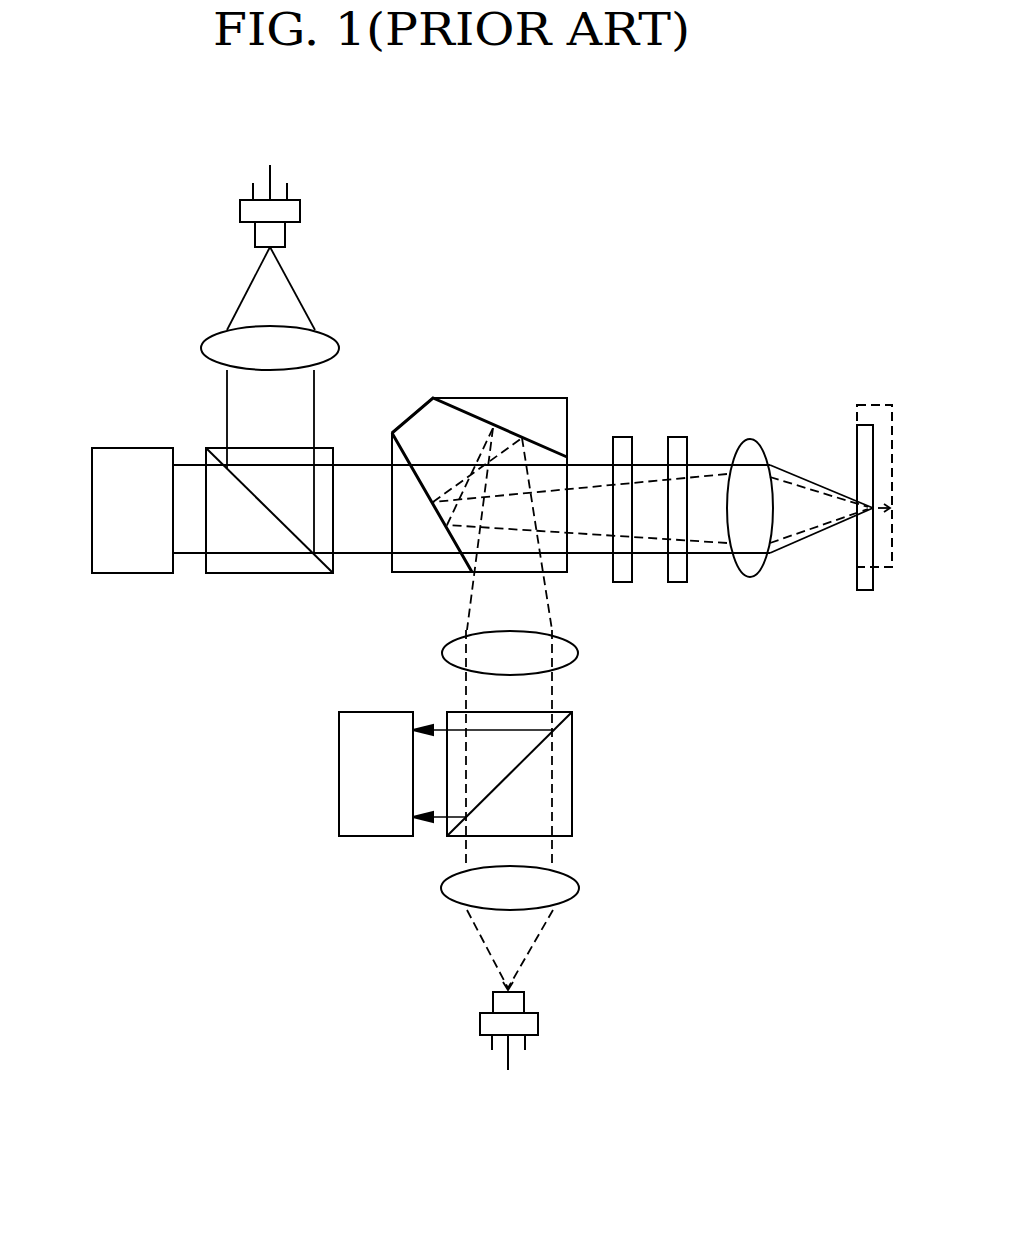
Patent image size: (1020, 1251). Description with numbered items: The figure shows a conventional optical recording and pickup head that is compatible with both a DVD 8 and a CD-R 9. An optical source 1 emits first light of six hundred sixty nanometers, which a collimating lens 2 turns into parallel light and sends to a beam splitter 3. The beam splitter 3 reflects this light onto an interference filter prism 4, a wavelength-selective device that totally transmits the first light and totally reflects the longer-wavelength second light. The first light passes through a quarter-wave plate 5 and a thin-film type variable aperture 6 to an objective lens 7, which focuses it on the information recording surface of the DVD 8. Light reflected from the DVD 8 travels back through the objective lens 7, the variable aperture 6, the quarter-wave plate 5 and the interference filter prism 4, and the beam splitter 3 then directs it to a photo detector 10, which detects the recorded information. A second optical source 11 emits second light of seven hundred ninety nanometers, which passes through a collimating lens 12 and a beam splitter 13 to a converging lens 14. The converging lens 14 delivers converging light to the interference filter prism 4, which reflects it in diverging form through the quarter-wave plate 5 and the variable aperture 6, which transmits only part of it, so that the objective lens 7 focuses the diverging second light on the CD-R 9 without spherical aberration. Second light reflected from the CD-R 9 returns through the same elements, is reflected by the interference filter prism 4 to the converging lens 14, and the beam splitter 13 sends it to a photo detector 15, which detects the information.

The optical source 1 is at (300, 213).
The collimating lens 2 is at (340, 350).
The beam splitter 3 is at (275, 573).
The interference filter prism 4 is at (505, 396).
The quarter-wave plate 5 is at (620, 437).
The thin-film type variable aperture 6 is at (680, 582).
The objective lens 7 is at (747, 442).
The DVD 8 is at (867, 590).
The CD-R 9 is at (893, 450).
The photo detector 10 is at (92, 508).
The optical source 11 is at (539, 1022).
The collimating lens 12 is at (578, 888).
The beam splitter 13 is at (572, 780).
The converging lens 14 is at (578, 652).
The photo detector 15 is at (339, 772).